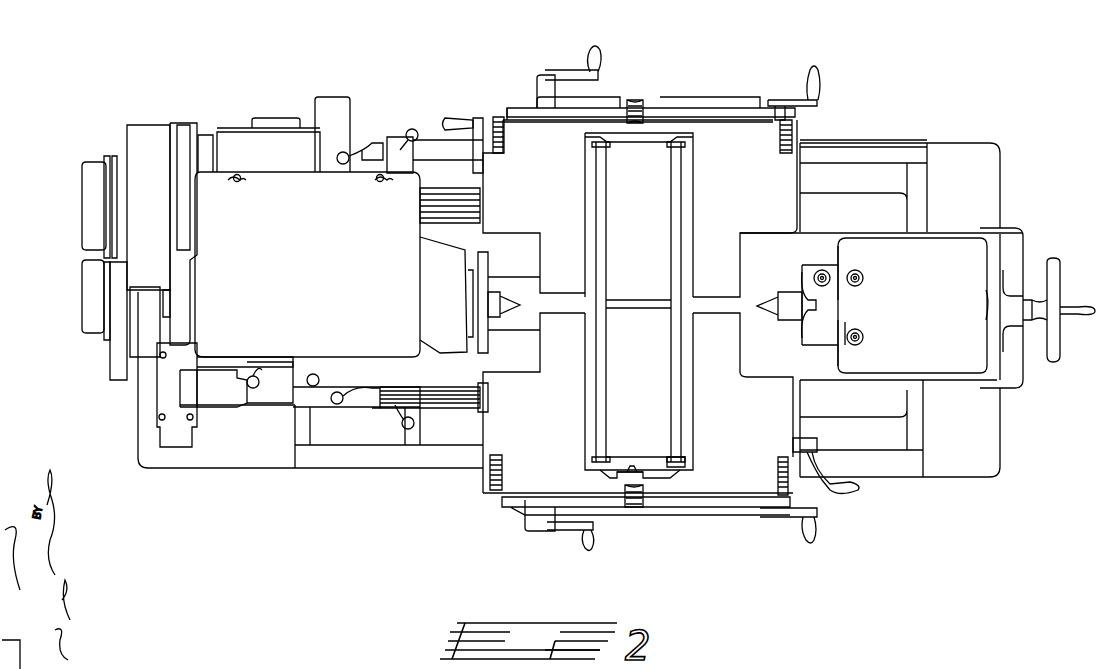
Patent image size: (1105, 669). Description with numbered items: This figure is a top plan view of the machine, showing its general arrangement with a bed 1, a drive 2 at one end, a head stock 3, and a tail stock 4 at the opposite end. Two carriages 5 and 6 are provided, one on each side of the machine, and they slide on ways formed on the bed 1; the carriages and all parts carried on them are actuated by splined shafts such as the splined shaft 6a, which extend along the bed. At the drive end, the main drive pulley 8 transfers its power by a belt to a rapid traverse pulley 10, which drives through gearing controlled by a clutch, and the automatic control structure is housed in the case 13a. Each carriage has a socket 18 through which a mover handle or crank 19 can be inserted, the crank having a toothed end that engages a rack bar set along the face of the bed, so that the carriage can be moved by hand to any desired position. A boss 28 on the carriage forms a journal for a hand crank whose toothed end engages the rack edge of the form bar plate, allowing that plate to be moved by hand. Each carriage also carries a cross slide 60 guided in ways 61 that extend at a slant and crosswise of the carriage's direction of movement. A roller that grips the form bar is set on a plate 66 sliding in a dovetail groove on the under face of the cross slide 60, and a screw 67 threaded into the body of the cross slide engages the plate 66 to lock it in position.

The bed 1 is at (835, 408).
The drive 2 is at (155, 147).
The head stock 3 is at (448, 280).
The tail stock 4 is at (808, 310).
The carriage 5 is at (505, 420).
The carriage 6 is at (802, 138).
The splined shaft 6a is at (453, 213).
The main drive pulley 8 is at (110, 198).
The rapid traverse pulley 10 is at (100, 338).
The case 13a is at (275, 148).
The socket 18 is at (543, 88).
The crank 19 is at (575, 70).
The boss 28 is at (645, 103).
The cross slide 60 is at (652, 217).
The ways 61 is at (603, 477).
The plate 66 is at (700, 458).
The screw 67 is at (628, 457).